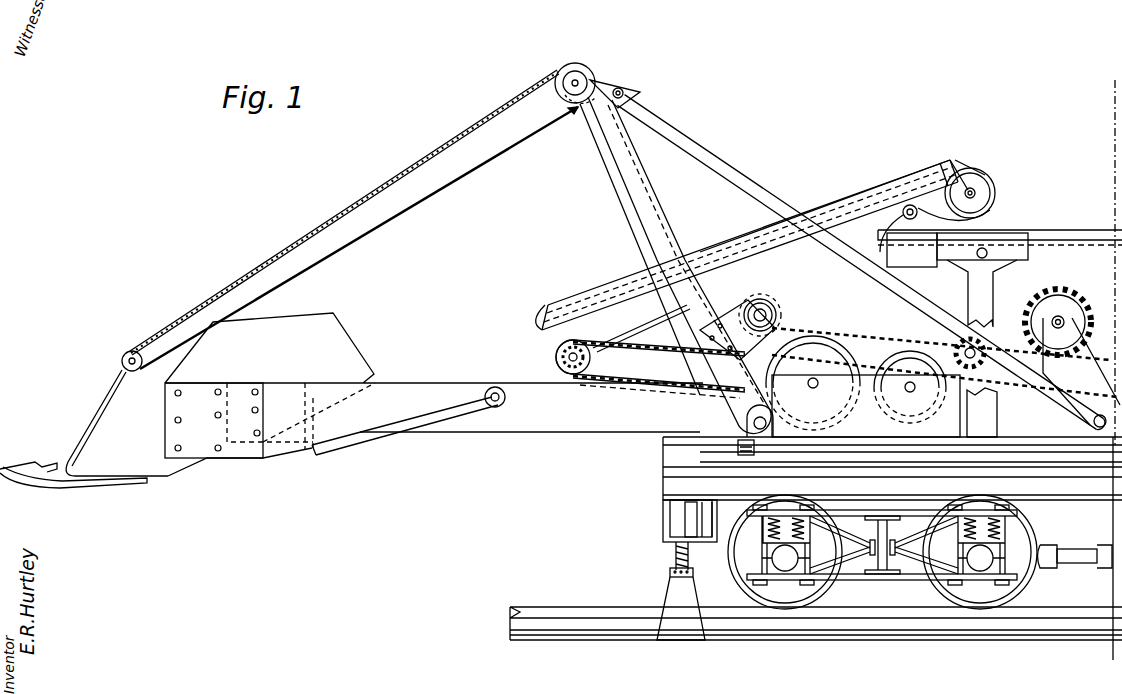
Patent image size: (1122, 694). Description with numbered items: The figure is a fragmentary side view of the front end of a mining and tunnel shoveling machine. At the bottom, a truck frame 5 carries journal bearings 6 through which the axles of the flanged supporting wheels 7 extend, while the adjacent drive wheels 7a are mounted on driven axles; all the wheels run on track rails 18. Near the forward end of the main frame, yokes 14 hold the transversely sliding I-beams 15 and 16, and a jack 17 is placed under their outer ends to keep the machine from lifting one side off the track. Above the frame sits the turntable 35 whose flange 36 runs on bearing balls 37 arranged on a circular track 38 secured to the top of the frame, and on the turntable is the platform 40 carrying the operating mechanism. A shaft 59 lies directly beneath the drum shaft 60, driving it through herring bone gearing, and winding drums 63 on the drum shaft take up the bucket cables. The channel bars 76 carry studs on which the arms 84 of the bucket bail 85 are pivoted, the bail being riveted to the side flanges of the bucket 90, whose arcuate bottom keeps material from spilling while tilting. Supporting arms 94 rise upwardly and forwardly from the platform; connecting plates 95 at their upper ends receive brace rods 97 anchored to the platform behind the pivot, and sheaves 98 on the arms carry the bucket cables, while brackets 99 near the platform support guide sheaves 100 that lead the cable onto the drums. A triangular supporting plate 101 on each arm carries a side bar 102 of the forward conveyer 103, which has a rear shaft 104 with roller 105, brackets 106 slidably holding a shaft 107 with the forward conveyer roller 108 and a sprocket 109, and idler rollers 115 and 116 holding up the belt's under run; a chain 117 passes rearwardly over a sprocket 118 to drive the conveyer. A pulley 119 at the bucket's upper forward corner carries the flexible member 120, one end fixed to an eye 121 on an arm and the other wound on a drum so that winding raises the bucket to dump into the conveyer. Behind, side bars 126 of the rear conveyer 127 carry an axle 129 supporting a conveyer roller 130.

The truck frame 5 is at (902, 580).
The journal bearing 6 is at (770, 552).
The supporting wheel 7 is at (800, 592).
The drive wheel 7a is at (987, 597).
The yoke 14 is at (663, 512).
The I-beam 15 is at (680, 518).
The I-beam 16 is at (702, 532).
The jack 17 is at (672, 587).
The track rail 18 is at (613, 633).
The turntable 35 is at (795, 455).
The flange 36 is at (738, 450).
The bearing ball 37 is at (750, 462).
The circular track 38 is at (663, 477).
The platform 40 is at (663, 440).
The shaft 59 is at (1027, 323).
The drum shaft 60 is at (1058, 318).
The winding drum 63 is at (494, 408).
The channel bar 76 is at (478, 425).
The arm of bucket bail 84 is at (397, 420).
The bucket bail 85 is at (298, 455).
The bucket 90 is at (94, 409).
The supporting arm 94 is at (633, 203).
The connecting plate 95 is at (616, 82).
The brace rod 97 is at (730, 160).
The sheave 98 is at (595, 50).
The bracket 99 is at (767, 310).
The sheave 100 is at (777, 313).
The supporting plate 101 is at (638, 271).
The side bar 102 is at (855, 208).
The forward conveyer 103 is at (905, 180).
The shaft 104 is at (980, 188).
The roller 105 is at (987, 197).
The bracket 106 is at (610, 350).
The shaft 107 is at (557, 350).
The forward conveyer roller 108 is at (600, 332).
The sprocket 109 is at (569, 357).
The idler roller 115 is at (952, 178).
The idler roller 116 is at (737, 319).
The chain 117 is at (583, 385).
The sprocket 118 is at (835, 350).
The pulley 119 is at (130, 350).
The flexible member 120 is at (278, 255).
The eye 121 is at (577, 113).
The side bar 126 is at (1010, 230).
The rear conveyer 127 is at (1048, 225).
The axle 129 is at (880, 249).
The conveyer roller 130 is at (877, 249).